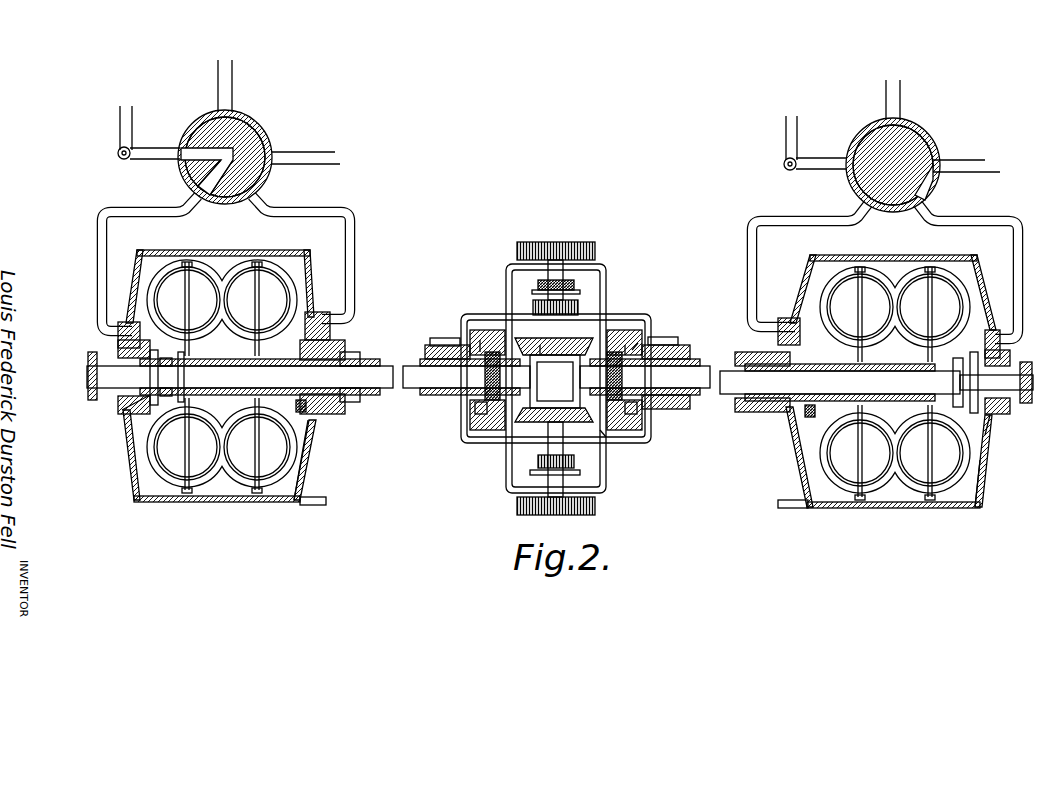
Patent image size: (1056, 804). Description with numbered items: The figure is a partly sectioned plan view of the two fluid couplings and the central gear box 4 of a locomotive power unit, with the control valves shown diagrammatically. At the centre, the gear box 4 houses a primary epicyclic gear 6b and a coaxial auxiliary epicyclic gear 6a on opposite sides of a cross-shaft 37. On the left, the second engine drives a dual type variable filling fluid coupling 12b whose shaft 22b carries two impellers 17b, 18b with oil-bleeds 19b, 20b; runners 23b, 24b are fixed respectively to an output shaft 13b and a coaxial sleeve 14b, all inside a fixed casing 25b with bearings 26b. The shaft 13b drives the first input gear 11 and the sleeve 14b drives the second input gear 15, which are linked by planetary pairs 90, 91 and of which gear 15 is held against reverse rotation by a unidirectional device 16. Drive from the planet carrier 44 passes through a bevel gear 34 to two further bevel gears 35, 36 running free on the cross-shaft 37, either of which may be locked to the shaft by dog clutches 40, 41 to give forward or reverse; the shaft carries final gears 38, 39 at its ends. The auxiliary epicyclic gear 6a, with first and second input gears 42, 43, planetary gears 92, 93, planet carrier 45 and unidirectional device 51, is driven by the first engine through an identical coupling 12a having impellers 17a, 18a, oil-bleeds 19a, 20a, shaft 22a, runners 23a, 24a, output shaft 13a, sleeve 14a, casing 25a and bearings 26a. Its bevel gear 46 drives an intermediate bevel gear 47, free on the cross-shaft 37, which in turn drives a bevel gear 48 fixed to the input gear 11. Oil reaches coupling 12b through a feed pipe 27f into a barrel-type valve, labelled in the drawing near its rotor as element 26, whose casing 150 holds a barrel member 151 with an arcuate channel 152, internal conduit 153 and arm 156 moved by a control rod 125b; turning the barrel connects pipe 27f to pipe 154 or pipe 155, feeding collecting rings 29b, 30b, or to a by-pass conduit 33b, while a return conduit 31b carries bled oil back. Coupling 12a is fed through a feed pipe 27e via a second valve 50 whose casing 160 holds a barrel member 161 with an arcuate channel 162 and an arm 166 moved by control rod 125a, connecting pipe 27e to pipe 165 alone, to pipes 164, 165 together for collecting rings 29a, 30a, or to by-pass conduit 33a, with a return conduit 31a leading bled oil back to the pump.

The gear box 4 is at (618, 322).
The auxiliary epicyclic gear 6a is at (630, 334).
The primary epicyclic gear 6b is at (475, 334).
The first input gear 11 is at (540, 345).
The dual type fluid coupling 12a is at (893, 501).
The dual type variable filling fluid coupling 12b is at (230, 501).
The output shaft 13a is at (700, 378).
The output shaft 13b is at (398, 388).
The coaxial sleeve 14a is at (690, 408).
The coaxial sleeve 14b is at (405, 395).
The second input gear 15 is at (470, 352).
The unidirectional device 16 is at (458, 352).
The impeller 17a is at (895, 307).
The impeller 17b is at (222, 300).
The impeller 18a is at (810, 272).
The impeller 18b is at (300, 292).
The oil-bleed 19a is at (928, 270).
The oil-bleed 19b is at (191, 265).
The oil-bleed 20a is at (850, 522).
The oil-bleed 20b is at (272, 512).
The shaft 22a is at (1005, 404).
The shaft 22b is at (132, 406).
The runner 23a is at (933, 398).
The runner 23b is at (187, 300).
The runner 24a is at (824, 312).
The runner 24b is at (257, 300).
The fixed casing 25a is at (985, 462).
The fixed casing 25b is at (312, 455).
The valve rotor 26 is at (238, 112).
The bearings 26a is at (768, 412).
The bearings 26b is at (332, 352).
The feed pipe 27e is at (962, 160).
The feed pipe 27f is at (300, 149).
The collecting ring 29a is at (990, 432).
The collecting ring 29b is at (140, 420).
The collecting ring 30a is at (812, 418).
The collecting ring 30b is at (304, 410).
The return conduit 31a is at (800, 511).
The return conduit 31b is at (322, 506).
The by-pass conduit 33a is at (884, 91).
The by-pass conduit 33b is at (222, 74).
The bevel gear 34 is at (548, 310).
The further bevel gear 35 is at (590, 340).
The further bevel gear 36 is at (520, 416).
The cross-shaft 37 is at (555, 275).
The final gear 38 is at (575, 248).
The final gear 39 is at (515, 507).
The dog clutch 40 is at (545, 288).
The dog clutch 41 is at (538, 462).
The first input gear 42 is at (638, 343).
The second input gear 43 is at (645, 355).
The planet carrier 44 is at (480, 340).
The planet carrier 45 is at (625, 345).
The bevel gear 46 is at (600, 430).
The intermediate bevel gear 47 is at (555, 381).
The bevel gear 48 is at (555, 390).
The valve 50 is at (910, 128).
The unidirectional device 51 is at (665, 358).
The planet wheel 90 is at (487, 425).
The planet gear 91 is at (480, 412).
The planetary gear 92 is at (630, 440).
The planetary gear 93 is at (637, 410).
The control rod 125a is at (785, 137).
The control rod 125b is at (119, 130).
The casing 150 is at (264, 131).
The barrel member 151 is at (245, 183).
The arcuate channel 152 is at (262, 176).
The internal conduit 153 is at (190, 172).
The pipe 154 is at (107, 247).
The pipe 155 is at (350, 245).
The arm 156 is at (152, 147).
The casing 160 is at (935, 138).
The barrel member 161 is at (925, 202).
The arcuate channel 162 is at (940, 181).
The pipe 164 is at (748, 253).
The pipe 165 is at (1012, 258).
The arm 166 is at (815, 155).